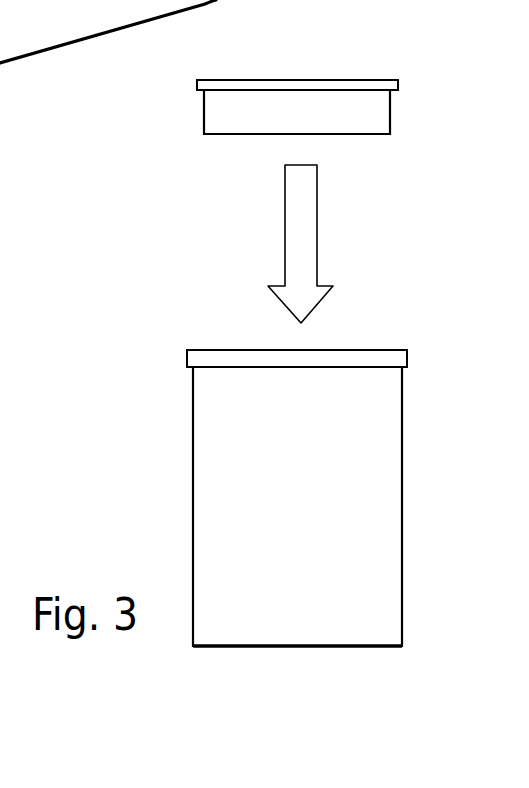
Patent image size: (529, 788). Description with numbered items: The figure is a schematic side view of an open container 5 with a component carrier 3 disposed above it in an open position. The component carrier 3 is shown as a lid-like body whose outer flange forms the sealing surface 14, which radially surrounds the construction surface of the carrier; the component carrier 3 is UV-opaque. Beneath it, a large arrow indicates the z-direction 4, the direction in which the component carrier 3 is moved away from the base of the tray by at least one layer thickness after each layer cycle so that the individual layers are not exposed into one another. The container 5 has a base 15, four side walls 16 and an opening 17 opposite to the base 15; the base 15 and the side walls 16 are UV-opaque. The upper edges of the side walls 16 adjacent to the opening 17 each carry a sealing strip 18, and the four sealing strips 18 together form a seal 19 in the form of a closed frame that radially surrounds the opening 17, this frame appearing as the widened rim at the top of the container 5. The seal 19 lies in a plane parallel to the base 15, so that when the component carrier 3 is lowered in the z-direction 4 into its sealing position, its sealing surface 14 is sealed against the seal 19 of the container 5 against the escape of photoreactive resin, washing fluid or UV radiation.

The component carrier 3 is at (315, 110).
The sealing surface 14 is at (199, 113).
The z-direction 4 is at (302, 237).
The container 5 is at (247, 506).
The side walls 16 is at (250, 472).
The opening 17 is at (297, 302).
The sealing strip 18 is at (310, 302).
The seal 19 is at (370, 362).
The base 15 is at (242, 648).